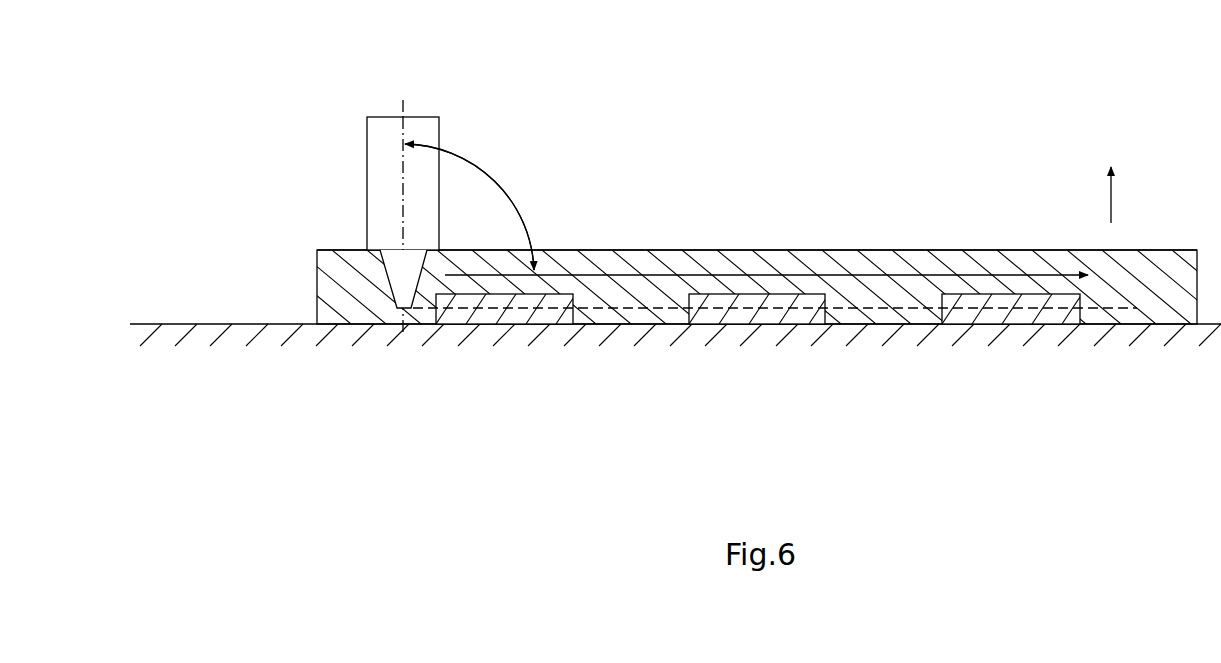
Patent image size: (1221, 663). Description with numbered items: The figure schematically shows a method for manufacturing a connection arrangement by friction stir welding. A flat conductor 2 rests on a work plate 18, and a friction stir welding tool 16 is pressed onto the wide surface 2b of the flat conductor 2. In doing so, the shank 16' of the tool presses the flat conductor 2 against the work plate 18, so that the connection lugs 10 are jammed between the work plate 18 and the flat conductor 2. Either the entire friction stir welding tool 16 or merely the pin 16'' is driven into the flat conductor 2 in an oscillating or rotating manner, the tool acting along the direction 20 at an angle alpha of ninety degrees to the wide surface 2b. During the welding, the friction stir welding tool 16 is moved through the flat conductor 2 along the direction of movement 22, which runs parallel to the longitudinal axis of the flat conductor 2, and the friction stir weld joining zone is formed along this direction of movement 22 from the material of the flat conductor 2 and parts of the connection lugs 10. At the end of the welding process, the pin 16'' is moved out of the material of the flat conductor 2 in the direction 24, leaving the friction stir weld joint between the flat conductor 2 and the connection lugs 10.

The flat conductor 2 is at (823, 265).
The wide surface 2b is at (730, 249).
The connection lug 10 is at (527, 318).
The friction stir welding tool 16 is at (445, 54).
The shank 16' is at (365, 183).
The pin 16'' is at (333, 279).
The work plate 18 is at (177, 322).
The direction of movement 20 is at (401, 184).
The direction of movement 22 is at (613, 275).
The direction of movement 24 is at (1111, 202).
The angle alpha is at (746, 209).